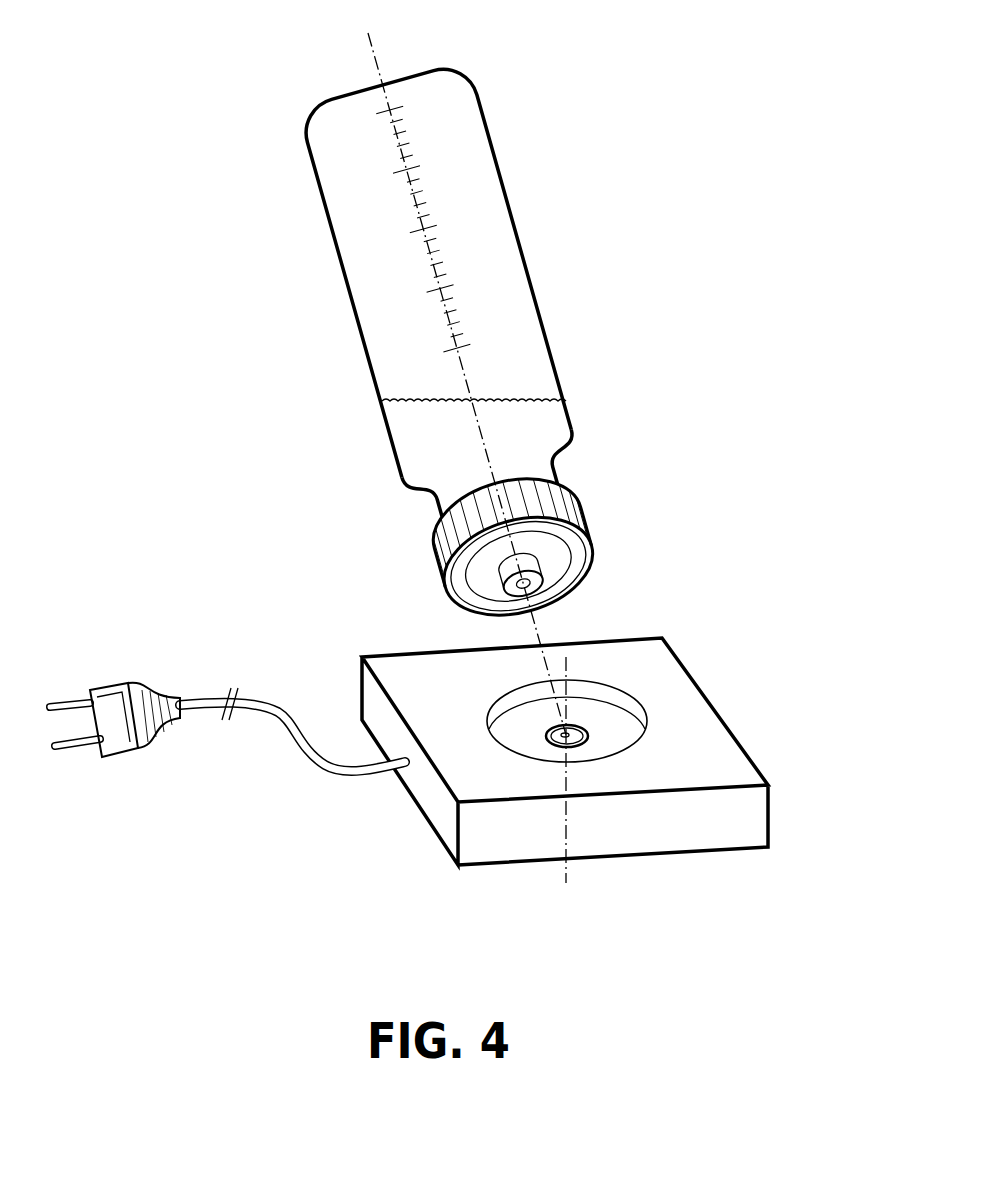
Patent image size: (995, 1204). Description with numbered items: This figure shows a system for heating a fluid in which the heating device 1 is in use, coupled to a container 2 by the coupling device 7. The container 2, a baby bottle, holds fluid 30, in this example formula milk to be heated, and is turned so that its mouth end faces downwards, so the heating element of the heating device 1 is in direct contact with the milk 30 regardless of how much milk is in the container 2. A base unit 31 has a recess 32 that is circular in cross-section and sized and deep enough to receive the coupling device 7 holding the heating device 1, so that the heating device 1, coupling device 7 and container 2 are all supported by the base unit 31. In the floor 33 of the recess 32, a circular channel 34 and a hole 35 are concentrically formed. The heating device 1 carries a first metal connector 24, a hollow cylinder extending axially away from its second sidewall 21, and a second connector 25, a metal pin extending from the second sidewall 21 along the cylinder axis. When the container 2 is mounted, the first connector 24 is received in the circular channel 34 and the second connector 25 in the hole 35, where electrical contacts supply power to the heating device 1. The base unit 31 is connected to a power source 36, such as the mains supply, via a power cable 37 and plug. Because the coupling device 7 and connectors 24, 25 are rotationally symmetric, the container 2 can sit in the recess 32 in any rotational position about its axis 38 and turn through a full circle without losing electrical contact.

The heating device 1 is at (468, 573).
The container 2 is at (511, 214).
The coupling device 7 is at (582, 511).
The second sidewall 21 is at (566, 548).
The first metal connector 24 is at (538, 571).
The second connector 25 is at (470, 612).
The fluid 30 is at (548, 418).
The base unit 31 is at (772, 812).
The recess 32 is at (602, 713).
The floor 33 is at (627, 724).
The circular channel 34 is at (588, 738).
The hole 35 is at (560, 727).
The power source 36 is at (112, 688).
The power cable 37 is at (277, 710).
The axis 38 is at (371, 42).